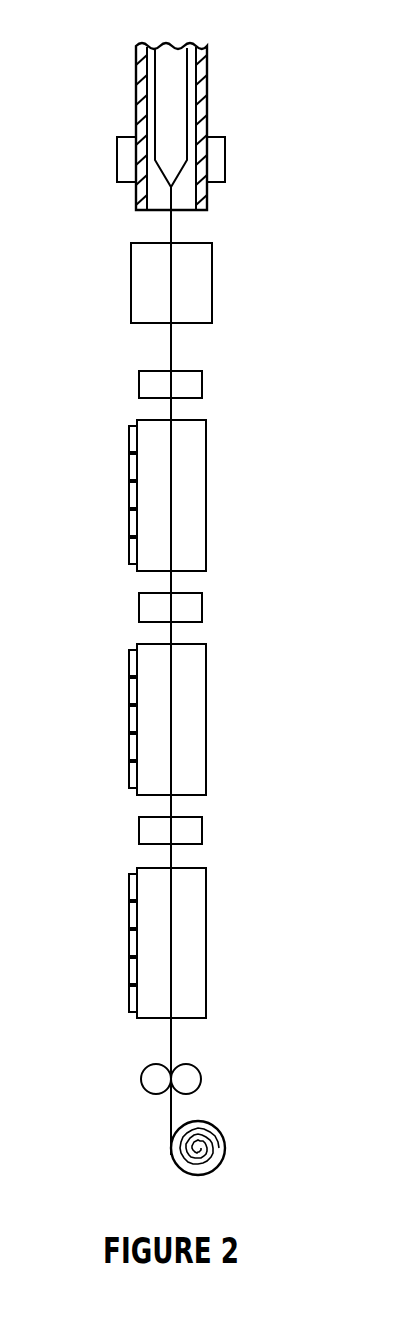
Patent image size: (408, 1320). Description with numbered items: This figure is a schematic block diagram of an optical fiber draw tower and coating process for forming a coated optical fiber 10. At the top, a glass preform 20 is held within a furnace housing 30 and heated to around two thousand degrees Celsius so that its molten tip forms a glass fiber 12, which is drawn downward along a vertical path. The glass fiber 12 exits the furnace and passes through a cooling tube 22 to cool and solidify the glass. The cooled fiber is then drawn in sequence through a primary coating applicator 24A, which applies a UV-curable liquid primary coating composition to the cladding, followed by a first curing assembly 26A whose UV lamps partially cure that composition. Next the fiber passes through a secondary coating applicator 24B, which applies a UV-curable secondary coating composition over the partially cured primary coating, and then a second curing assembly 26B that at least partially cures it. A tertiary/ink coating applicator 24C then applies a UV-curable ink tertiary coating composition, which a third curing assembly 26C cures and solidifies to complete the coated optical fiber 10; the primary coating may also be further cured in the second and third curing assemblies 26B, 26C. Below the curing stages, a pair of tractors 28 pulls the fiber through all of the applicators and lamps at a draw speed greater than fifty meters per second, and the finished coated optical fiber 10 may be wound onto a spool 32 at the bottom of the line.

The coated optical fiber 10 is at (171, 1041).
The glass fiber 12 is at (171, 222).
The glass preform 20 is at (170, 122).
The cooling tube 22 is at (230, 282).
The primary coating applicator 24A is at (230, 382).
The secondary coating applicator 24B is at (230, 607).
The tertiary/ink coating applicator 24C is at (230, 829).
The first curing assembly 26A is at (230, 487).
The second curing assembly 26B is at (230, 710).
The third curing assembly 26C is at (230, 934).
The pair of tractors 28 is at (188, 1066).
The extruder barrel 30 is at (136, 90).
The spool 32 is at (220, 1131).